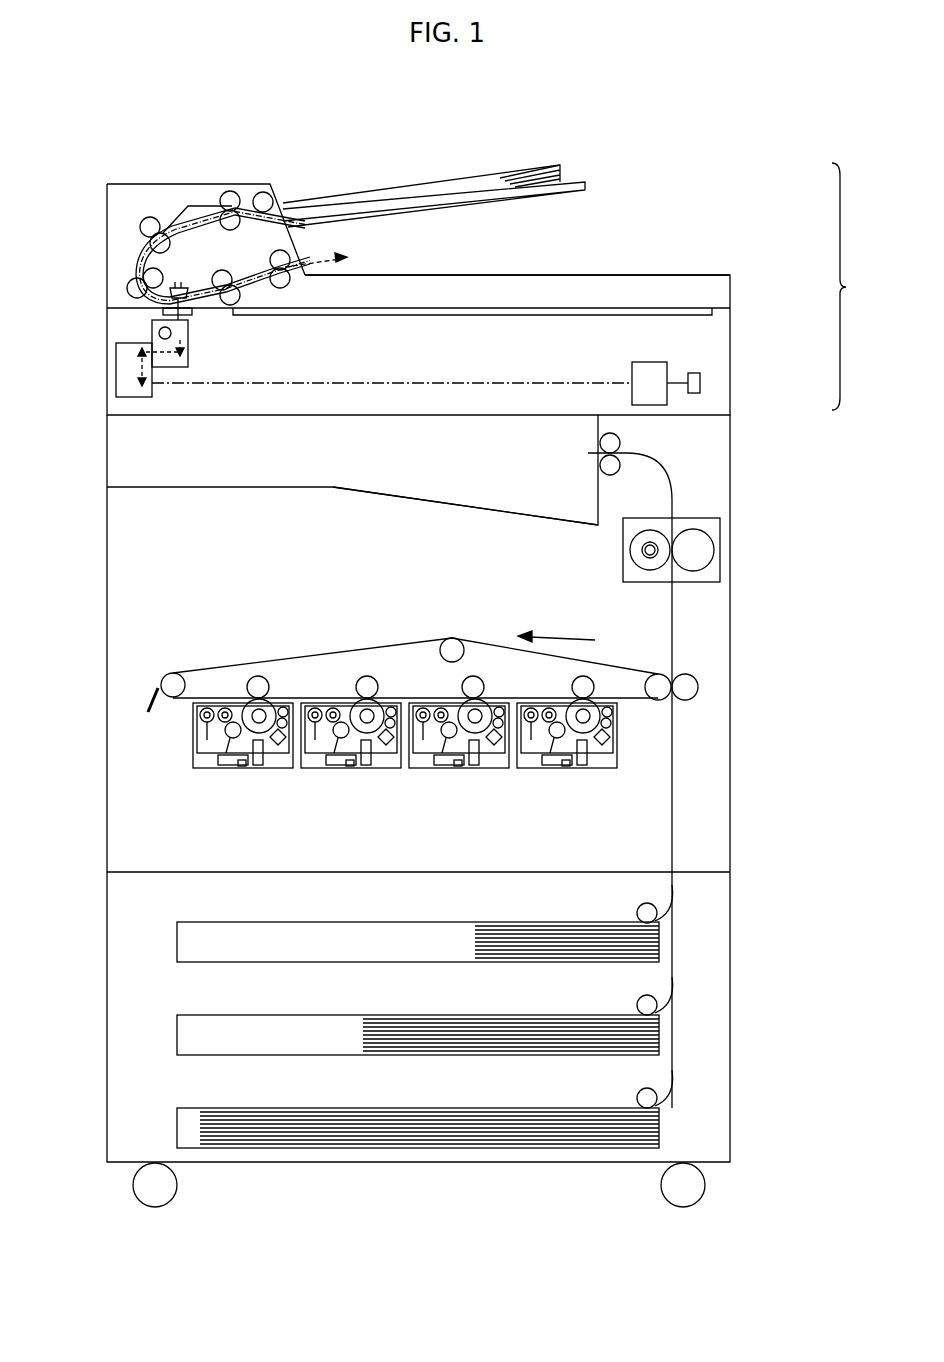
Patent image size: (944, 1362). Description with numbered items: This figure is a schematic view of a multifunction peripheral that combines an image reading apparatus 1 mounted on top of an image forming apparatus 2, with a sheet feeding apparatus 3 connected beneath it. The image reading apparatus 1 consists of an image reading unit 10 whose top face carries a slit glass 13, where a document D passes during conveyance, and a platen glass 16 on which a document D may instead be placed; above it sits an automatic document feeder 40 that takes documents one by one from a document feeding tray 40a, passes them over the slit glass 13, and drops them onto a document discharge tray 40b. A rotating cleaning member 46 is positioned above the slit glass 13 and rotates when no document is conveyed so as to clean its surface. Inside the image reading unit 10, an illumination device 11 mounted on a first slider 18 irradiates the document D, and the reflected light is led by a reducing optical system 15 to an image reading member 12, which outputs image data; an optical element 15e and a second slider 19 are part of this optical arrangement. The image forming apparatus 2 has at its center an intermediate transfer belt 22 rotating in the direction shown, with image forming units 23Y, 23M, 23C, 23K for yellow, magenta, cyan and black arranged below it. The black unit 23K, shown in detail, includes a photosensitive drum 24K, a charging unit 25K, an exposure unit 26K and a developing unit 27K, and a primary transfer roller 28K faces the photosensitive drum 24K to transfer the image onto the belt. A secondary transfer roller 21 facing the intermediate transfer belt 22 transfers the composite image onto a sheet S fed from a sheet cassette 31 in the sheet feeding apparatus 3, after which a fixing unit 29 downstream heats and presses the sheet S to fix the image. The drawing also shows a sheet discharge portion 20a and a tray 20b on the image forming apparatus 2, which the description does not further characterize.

The image reading apparatus 1 is at (852, 286).
The image forming apparatus 2 is at (752, 538).
The sheet feeding apparatus 3 is at (429, 1043).
The image reading unit 10 is at (748, 330).
The illumination device 11 is at (172, 334).
The image reading member 12 is at (700, 380).
The slit glass 13 is at (163, 311).
The reducing optical system 15 is at (187, 418).
The optical element 15e is at (650, 362).
The platen glass 16 is at (493, 308).
The first slider 18 is at (190, 362).
The second slider 19 is at (116, 382).
The sheet discharge tray 20a is at (465, 500).
The manual feed tray 20b is at (158, 690).
The secondary transfer roller 21 is at (690, 678).
The intermediate transfer belt 22 is at (348, 650).
The image forming unit (yellow) 23Y is at (226, 786).
The image forming unit (magenta) 23M is at (334, 786).
The image forming unit (cyan) 23C is at (442, 786).
The image forming unit (black) 23K is at (589, 751).
The photosensitive drum 24K is at (600, 715).
The charging unit 25K is at (615, 740).
The exposure unit 26K is at (583, 767).
The developing unit 27K is at (547, 706).
The primary transfer roller 28K is at (579, 634).
The fixing unit 29 is at (698, 518).
The sheet cassette 31 is at (177, 1117).
The automatic document feeder 40 is at (296, 178).
The document feeding tray 40a is at (413, 208).
The document discharge tray 40b is at (640, 275).
The rotating cleaning member 46 is at (180, 284).
The document D is at (545, 166).
The sheet S is at (542, 922).